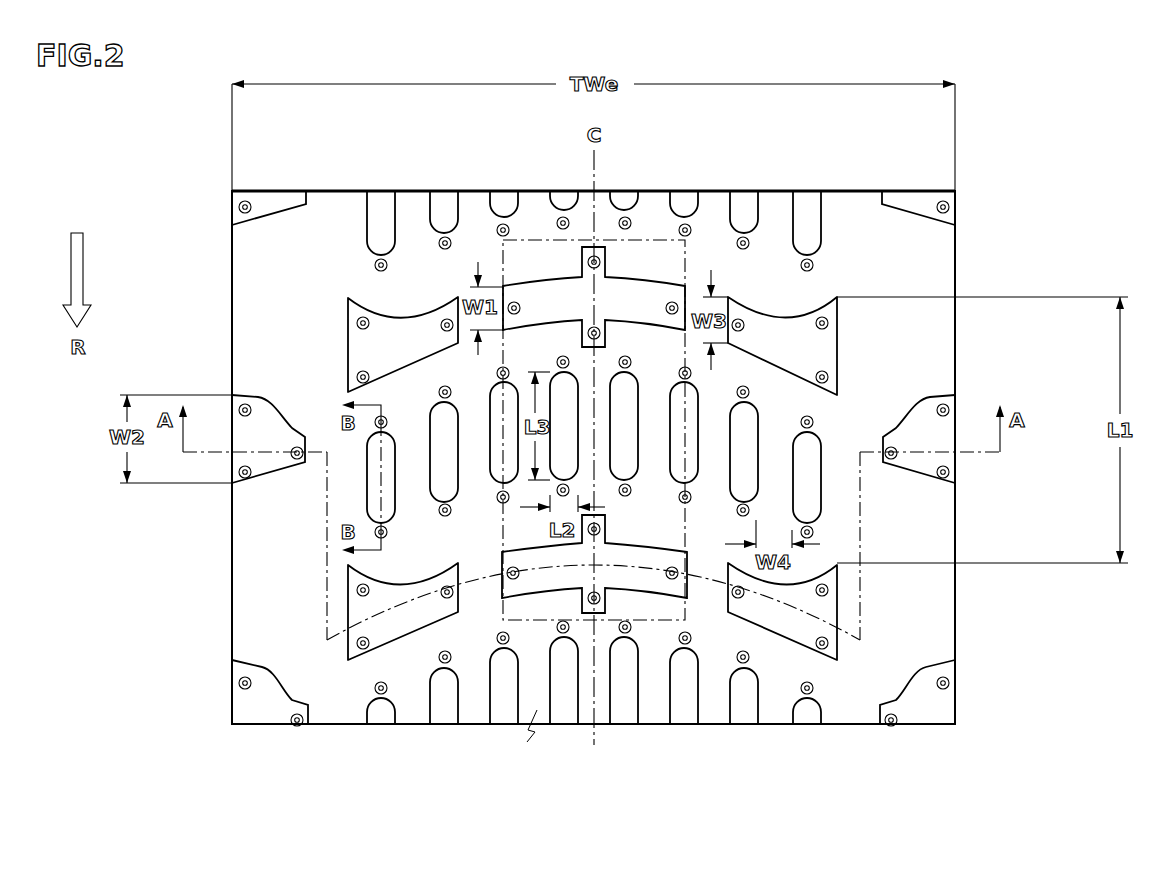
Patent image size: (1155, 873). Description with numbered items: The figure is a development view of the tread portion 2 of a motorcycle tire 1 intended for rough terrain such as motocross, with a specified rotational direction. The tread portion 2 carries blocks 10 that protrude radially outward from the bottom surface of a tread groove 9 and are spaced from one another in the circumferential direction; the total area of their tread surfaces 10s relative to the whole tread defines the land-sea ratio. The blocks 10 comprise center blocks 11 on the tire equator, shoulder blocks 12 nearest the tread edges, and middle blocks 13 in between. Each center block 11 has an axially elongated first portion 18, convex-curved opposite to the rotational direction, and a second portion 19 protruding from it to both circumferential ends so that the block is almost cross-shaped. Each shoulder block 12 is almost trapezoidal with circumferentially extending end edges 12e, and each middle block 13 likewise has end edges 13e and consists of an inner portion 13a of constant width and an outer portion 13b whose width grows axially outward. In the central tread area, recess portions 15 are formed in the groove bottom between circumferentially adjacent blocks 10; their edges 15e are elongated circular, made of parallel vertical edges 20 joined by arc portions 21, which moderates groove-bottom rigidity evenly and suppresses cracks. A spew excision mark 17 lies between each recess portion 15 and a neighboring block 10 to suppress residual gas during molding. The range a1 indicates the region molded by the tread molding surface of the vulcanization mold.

The tire 1 is at (968, 180).
The tread portion 2 is at (892, 185).
The tread groove 9 is at (335, 232).
The blocks 10 is at (596, 461).
The tread surfaces 10s is at (557, 300).
The center blocks 11 is at (643, 297).
The shoulder blocks 12 is at (260, 465).
The end edges 12e is at (308, 440).
The middle blocks 13 is at (358, 348).
The inner portion 13a is at (748, 603).
The outer portion 13b is at (815, 610).
The end edges 13e is at (728, 600).
The recess portions 15 is at (363, 453).
The edges 15e is at (383, 148).
The spew or excision mark 17 is at (750, 243).
The first portion 18 is at (533, 585).
The second portion 19 is at (590, 615).
The vertical edges 20 is at (432, 445).
The arc portions 21 is at (437, 405).
The range a1 is at (537, 245).